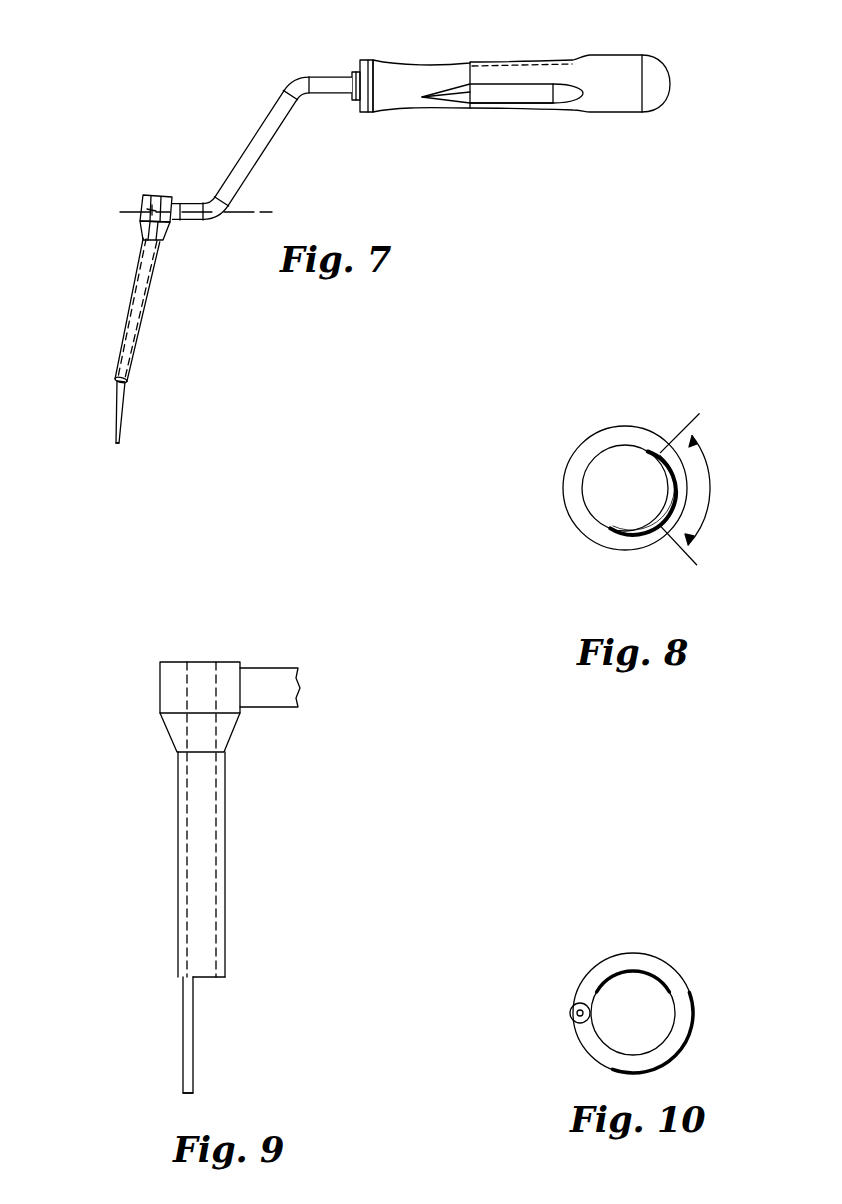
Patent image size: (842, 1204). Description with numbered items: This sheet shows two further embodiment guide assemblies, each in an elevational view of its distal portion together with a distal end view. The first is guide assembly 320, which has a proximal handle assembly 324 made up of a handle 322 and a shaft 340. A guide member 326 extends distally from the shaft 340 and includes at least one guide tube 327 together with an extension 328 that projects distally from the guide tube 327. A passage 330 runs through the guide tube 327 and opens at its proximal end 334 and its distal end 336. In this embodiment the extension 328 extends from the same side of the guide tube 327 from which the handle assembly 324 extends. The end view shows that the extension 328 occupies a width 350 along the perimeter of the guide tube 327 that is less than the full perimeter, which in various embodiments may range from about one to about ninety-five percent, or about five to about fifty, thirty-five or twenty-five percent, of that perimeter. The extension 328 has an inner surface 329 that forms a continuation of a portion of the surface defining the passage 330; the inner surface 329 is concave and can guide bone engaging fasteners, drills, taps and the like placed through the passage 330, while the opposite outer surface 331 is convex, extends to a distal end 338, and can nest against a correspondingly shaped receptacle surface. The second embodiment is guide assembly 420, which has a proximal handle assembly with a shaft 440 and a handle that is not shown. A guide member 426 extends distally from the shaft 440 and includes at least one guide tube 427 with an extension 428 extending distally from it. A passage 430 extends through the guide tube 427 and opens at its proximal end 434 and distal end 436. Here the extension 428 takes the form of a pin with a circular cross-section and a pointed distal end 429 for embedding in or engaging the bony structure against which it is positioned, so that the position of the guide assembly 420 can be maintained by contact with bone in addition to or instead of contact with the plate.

In FIG. 7, the guide assembly 320 is at (112, 247).
In FIG. 7, the handle 322 is at (425, 58).
In FIG. 7, the proximal handle assembly 324 is at (280, 168).
In FIG. 7, the guide member 326 is at (120, 318).
In FIG. 8, the guide member 326 is at (561, 463).
In FIG. 7, the guide tube 327 is at (152, 290).
In FIG. 8, the guide tube 327 is at (567, 515).
In FIG. 7, the extension 328 is at (132, 406).
In FIG. 8, the extension 328 is at (655, 528).
In FIG. 8, the inner surface 329 is at (652, 500).
In FIG. 7, the passage 330 is at (128, 366).
In FIG. 8, the passage 330 is at (626, 468).
In FIG. 8, the outer surface 331 is at (688, 468).
In FIG. 7, the proximal end 334 is at (150, 197).
In FIG. 7, the distal end 336 is at (118, 375).
In FIG. 7, the distal end 338 is at (115, 445).
In FIG. 7, the shaft 340 is at (190, 203).
In FIG. 8, the width 350 is at (714, 500).
In FIG. 9, the guide assembly 420 is at (307, 735).
In FIG. 9, the guide member 426 is at (228, 867).
In FIG. 10, the guide member 426 is at (590, 1065).
In FIG. 9, the guide tube 427 is at (178, 840).
In FIG. 10, the guide tube 427 is at (660, 960).
In FIG. 9, the extension 428 is at (183, 1047).
In FIG. 10, the extension 428 is at (573, 1005).
In FIG. 9, the pointed distal end 429 is at (195, 1095).
In FIG. 9, the passage 430 is at (203, 672).
In FIG. 10, the passage 430 is at (625, 992).
In FIG. 9, the proximal end 434 is at (160, 688).
In FIG. 9, the distal end 436 is at (227, 985).
In FIG. 9, the shaft 440 is at (265, 685).